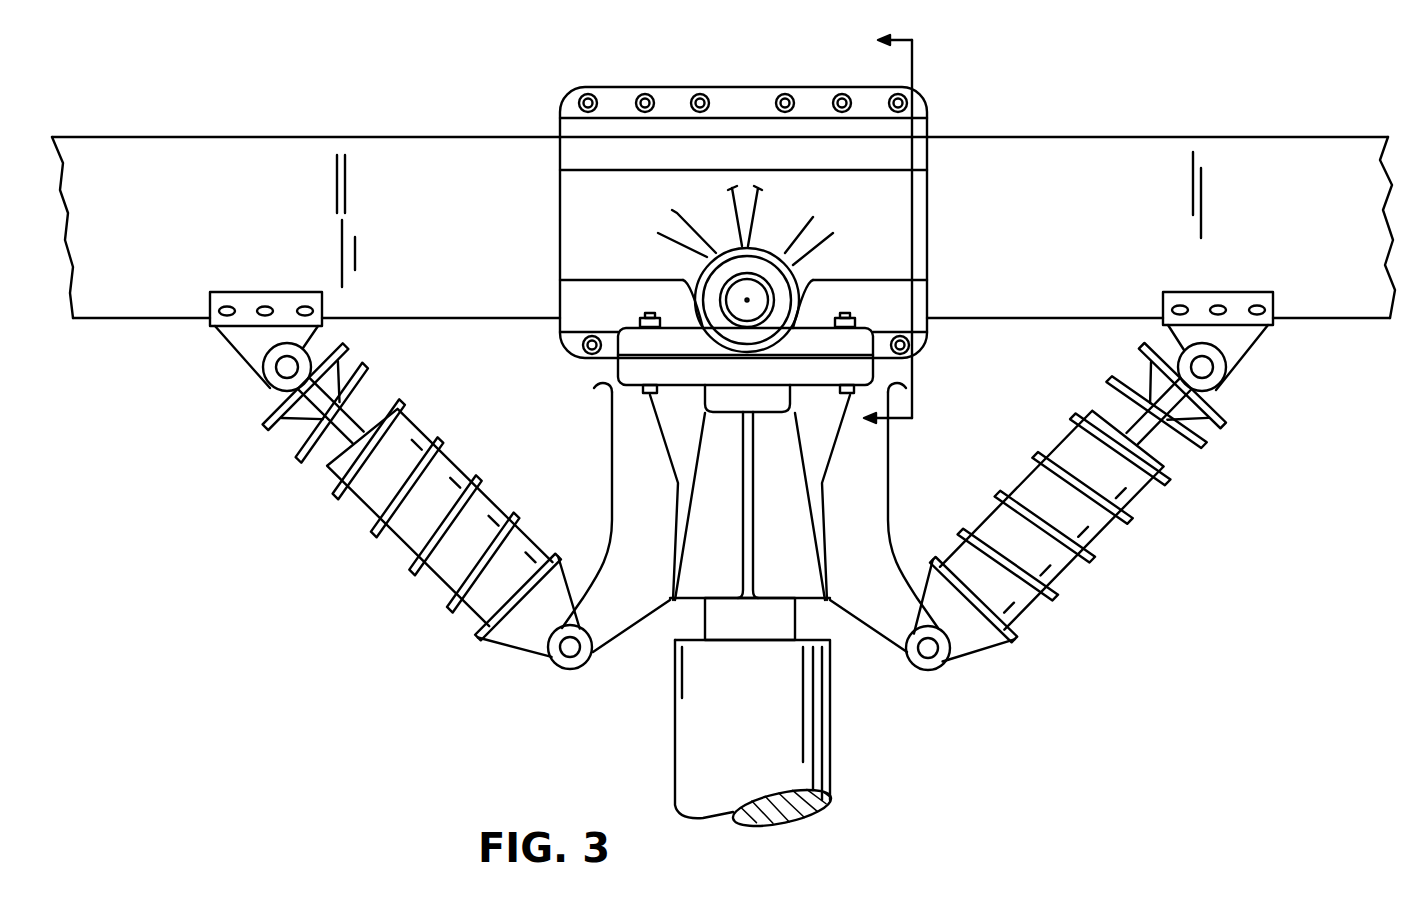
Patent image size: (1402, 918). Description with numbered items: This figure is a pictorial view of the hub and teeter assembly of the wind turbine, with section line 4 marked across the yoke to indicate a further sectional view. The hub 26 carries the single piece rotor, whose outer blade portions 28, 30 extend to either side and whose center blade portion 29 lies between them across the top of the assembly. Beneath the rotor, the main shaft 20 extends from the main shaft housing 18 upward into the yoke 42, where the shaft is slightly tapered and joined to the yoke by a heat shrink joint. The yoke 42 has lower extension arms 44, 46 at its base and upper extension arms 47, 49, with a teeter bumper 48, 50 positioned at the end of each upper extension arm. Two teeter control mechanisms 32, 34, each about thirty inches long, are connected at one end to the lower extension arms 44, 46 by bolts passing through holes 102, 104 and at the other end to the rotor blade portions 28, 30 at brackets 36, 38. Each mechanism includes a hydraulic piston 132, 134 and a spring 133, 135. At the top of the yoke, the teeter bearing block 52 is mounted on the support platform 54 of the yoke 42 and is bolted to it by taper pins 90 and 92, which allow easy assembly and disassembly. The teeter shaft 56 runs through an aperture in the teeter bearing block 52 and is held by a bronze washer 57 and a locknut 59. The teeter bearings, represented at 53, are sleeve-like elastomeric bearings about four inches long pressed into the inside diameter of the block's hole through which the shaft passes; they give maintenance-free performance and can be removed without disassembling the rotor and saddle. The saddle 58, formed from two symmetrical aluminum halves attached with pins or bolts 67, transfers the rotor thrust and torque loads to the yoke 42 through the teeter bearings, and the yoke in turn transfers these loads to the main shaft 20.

The section line 4- 4 is at (881, 241).
The main shaft housing 18 is at (684, 731).
The main shaft 20 is at (700, 612).
The hub 26 is at (771, 247).
The outer blade portion 28 is at (987, 136).
The center blade portion 29 is at (743, 179).
The outer blade portion 30 is at (270, 136).
The teeter control mechanism 32 is at (1056, 515).
The teeter control mechanism 34 is at (423, 513).
The bracket 36 is at (1220, 314).
The bracket 38 is at (265, 314).
The yoke 42 is at (797, 546).
The lower extension arm 44 is at (591, 539).
The lower extension arm 46 is at (900, 530).
The upper extension arm 47 is at (890, 452).
The teeter bumper 48 is at (915, 377).
The upper extension arm 49 is at (614, 428).
The teeter bumper 50 is at (610, 383).
The teeter bearing block 52 is at (690, 327).
The teeter bearings 53 is at (748, 300).
The support platform 54 is at (737, 395).
The teeter shaft 56 is at (800, 310).
The bronze washer 57 is at (757, 268).
The saddle 58 is at (680, 138).
The locknut 59 is at (748, 210).
The pins or bolts 67 is at (590, 95).
The taper pin 90 is at (855, 318).
The taper pin 92 is at (642, 318).
The hole 102 is at (938, 648).
The hole 104 is at (556, 652).
The hydraulic piston 132 is at (1078, 492).
The spring 133 is at (1147, 487).
The hydraulic piston 134 is at (330, 468).
The spring 135 is at (412, 491).